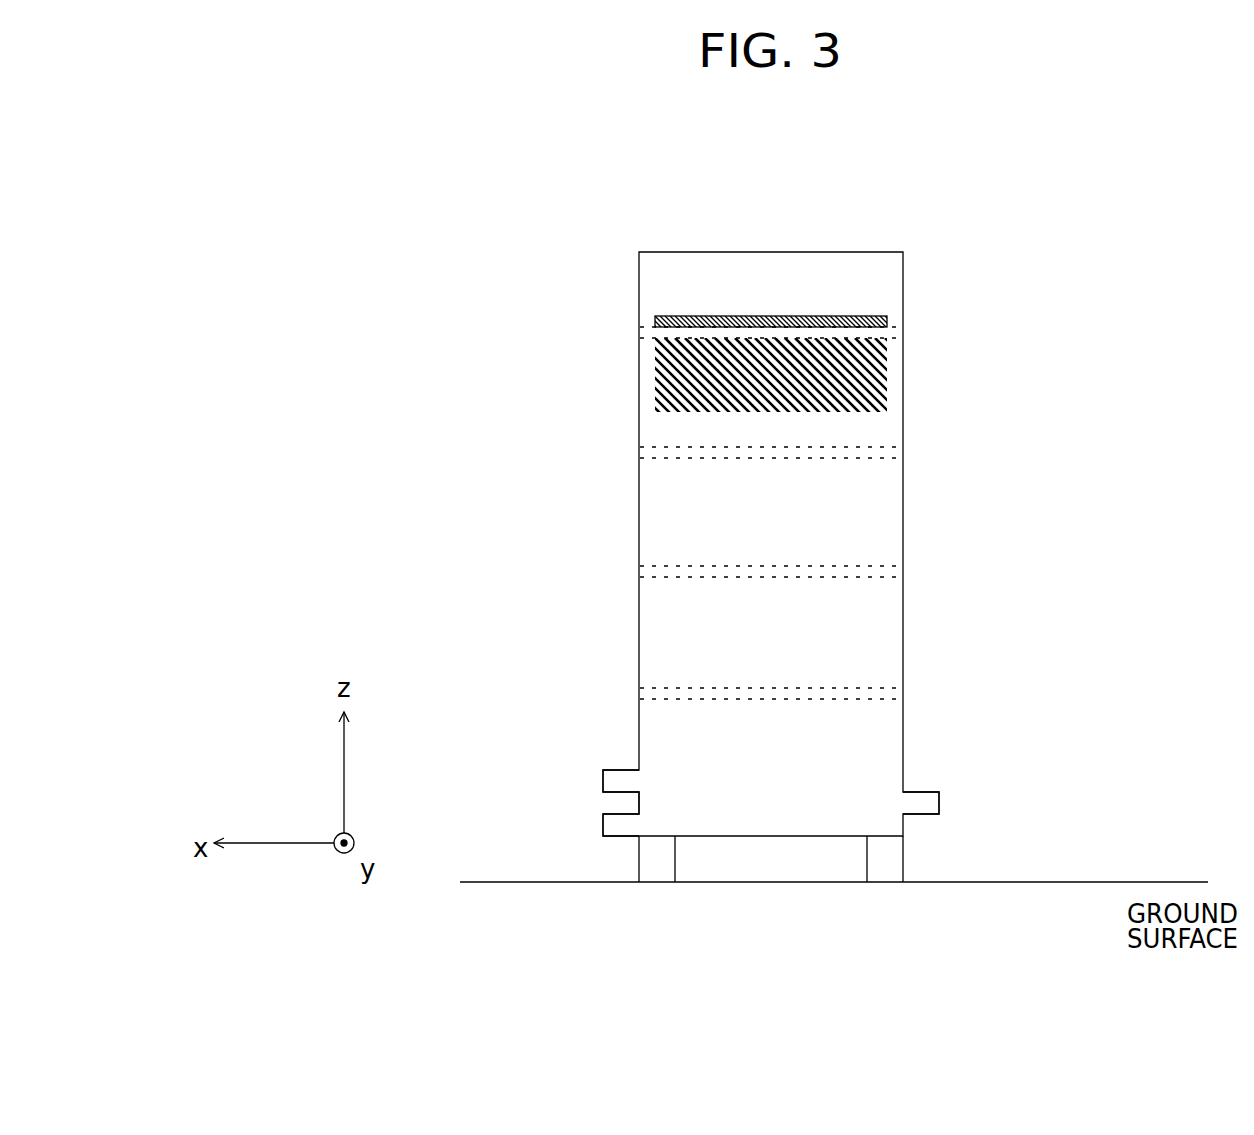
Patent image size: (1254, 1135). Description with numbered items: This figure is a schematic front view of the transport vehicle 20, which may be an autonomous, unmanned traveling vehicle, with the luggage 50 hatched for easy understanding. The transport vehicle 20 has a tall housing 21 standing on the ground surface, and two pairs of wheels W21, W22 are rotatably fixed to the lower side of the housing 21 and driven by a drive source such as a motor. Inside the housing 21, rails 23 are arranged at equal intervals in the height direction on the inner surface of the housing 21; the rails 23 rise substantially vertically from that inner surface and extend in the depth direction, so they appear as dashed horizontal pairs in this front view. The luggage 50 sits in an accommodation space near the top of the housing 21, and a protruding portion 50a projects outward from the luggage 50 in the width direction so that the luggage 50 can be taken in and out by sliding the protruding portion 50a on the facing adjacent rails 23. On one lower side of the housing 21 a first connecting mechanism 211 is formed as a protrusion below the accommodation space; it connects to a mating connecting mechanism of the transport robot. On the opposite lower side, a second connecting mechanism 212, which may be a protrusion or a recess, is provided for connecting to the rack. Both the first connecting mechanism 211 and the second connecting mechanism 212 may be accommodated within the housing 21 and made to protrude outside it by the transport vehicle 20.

The transport vehicle 20 is at (670, 158).
The housing 21 is at (824, 251).
The first connecting mechanism 211 is at (929, 790).
The second connecting mechanism 212 is at (602, 802).
The rails 23 is at (825, 705).
The luggage 50 is at (885, 388).
The protruding portion 50a is at (885, 316).
The wheel W21 is at (853, 849).
The wheel W22 is at (905, 862).